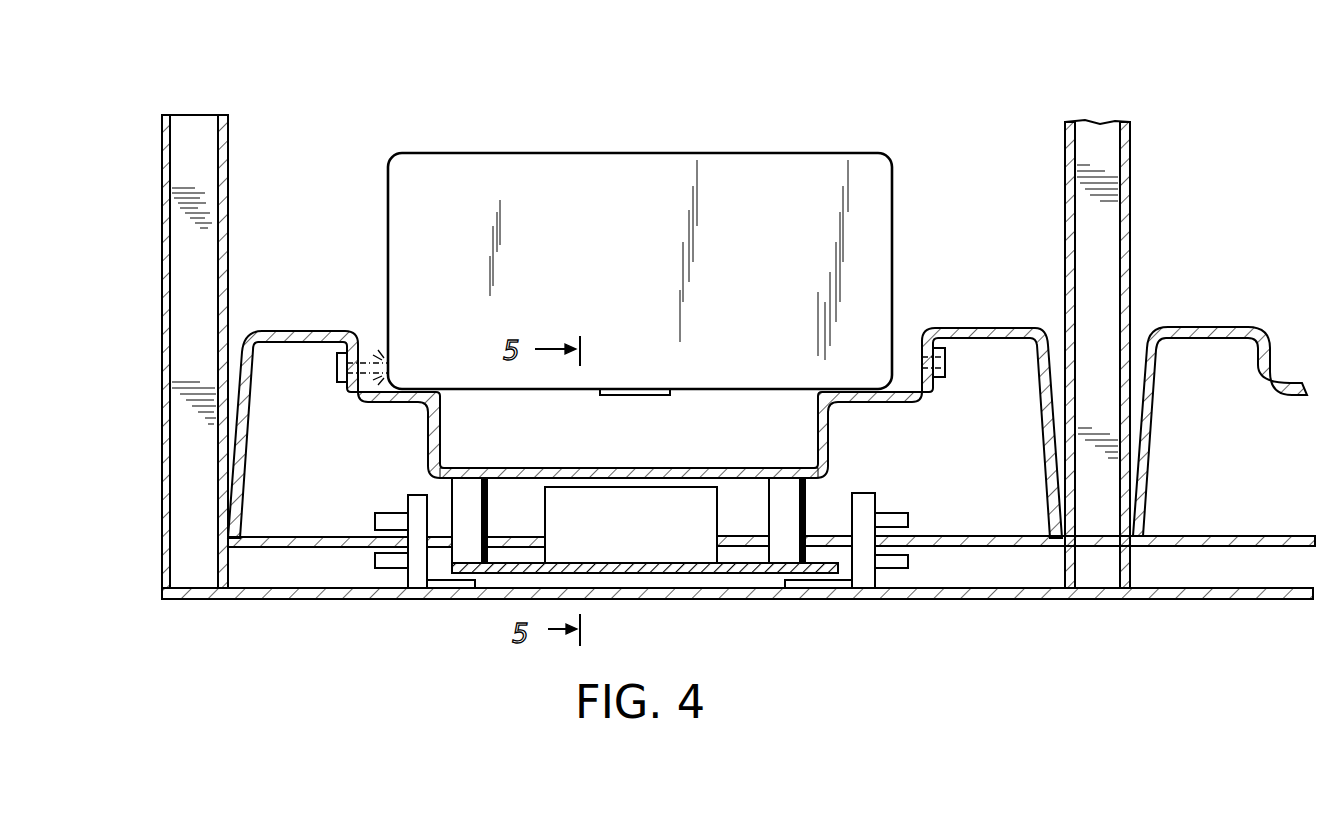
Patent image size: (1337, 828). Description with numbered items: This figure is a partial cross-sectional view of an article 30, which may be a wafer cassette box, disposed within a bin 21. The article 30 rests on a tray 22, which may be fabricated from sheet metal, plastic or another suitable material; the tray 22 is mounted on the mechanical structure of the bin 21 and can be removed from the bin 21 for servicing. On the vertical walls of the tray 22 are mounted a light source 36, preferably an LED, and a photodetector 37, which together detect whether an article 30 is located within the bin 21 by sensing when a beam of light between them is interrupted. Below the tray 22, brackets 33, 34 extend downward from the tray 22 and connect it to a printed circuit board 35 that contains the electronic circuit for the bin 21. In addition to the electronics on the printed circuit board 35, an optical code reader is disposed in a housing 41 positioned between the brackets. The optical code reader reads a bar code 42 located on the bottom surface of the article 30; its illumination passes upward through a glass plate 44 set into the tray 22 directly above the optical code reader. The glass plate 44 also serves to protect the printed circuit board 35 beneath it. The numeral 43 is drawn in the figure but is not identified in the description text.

The bin 21 is at (895, 88).
The tray 22 is at (325, 305).
The article 30 is at (499, 141).
The bracket 33 is at (447, 495).
The bracket 34 is at (770, 511).
The printed circuit board 35 is at (625, 577).
The light source 36 is at (337, 370).
The photodetector 37 is at (946, 376).
The housing 41 is at (720, 498).
The bar code 42 is at (633, 395).
The left leg 43 is at (508, 480).
The glass plate 44 is at (590, 446).